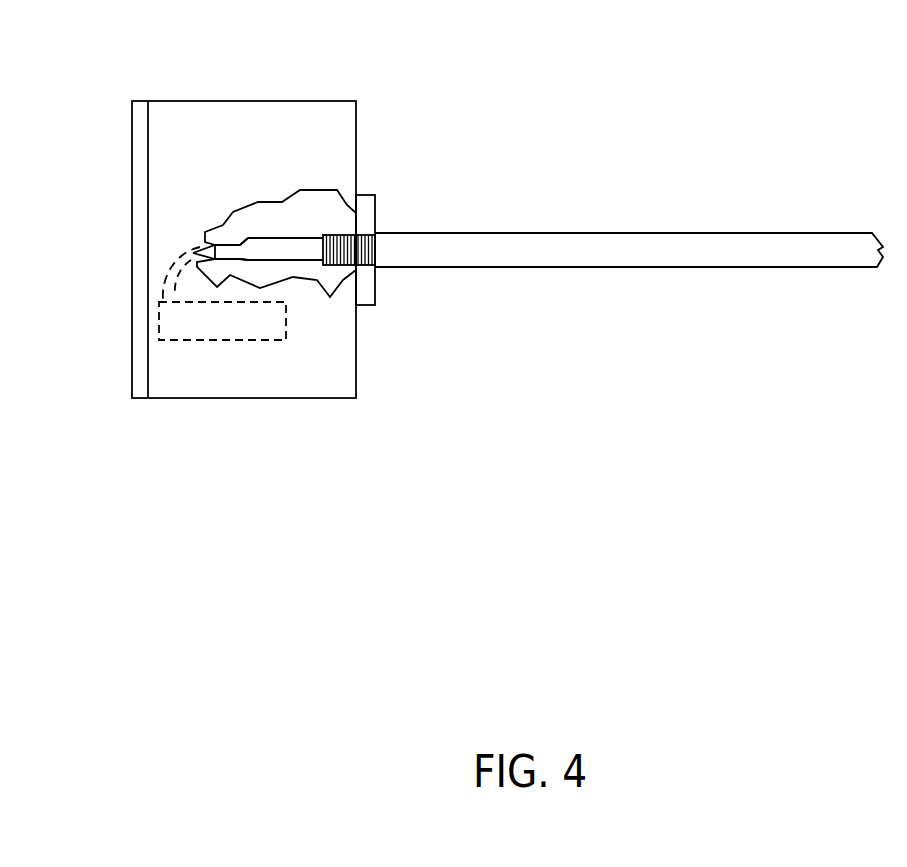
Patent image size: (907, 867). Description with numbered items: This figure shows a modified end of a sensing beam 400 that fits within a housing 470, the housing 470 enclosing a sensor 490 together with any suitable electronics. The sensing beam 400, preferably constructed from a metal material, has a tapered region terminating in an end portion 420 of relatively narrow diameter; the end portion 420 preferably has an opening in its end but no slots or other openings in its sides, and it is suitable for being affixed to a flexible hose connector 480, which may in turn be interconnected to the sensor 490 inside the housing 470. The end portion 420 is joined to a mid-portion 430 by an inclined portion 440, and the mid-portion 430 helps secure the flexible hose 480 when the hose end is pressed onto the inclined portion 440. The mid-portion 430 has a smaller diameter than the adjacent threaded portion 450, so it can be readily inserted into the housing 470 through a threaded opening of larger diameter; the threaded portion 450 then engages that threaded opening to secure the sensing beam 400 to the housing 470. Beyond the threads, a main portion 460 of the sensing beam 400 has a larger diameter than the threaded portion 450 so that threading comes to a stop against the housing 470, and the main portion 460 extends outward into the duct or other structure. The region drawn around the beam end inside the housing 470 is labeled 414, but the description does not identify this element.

The sensing beam 400 is at (521, 249).
The sealant / potting material 414 is at (290, 273).
The end portion 420 is at (227, 242).
The mid-portion 430 is at (312, 235).
The inclined portion 440 is at (241, 265).
The threaded portion 450 is at (353, 233).
The main portion 460 is at (638, 230).
The housing 470 is at (207, 100).
The flexible hose connector 480 is at (176, 256).
The sensor 490 is at (160, 323).